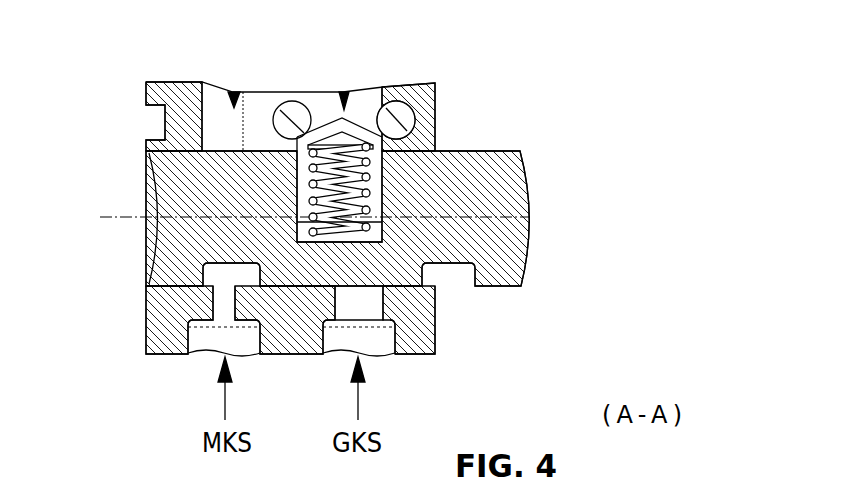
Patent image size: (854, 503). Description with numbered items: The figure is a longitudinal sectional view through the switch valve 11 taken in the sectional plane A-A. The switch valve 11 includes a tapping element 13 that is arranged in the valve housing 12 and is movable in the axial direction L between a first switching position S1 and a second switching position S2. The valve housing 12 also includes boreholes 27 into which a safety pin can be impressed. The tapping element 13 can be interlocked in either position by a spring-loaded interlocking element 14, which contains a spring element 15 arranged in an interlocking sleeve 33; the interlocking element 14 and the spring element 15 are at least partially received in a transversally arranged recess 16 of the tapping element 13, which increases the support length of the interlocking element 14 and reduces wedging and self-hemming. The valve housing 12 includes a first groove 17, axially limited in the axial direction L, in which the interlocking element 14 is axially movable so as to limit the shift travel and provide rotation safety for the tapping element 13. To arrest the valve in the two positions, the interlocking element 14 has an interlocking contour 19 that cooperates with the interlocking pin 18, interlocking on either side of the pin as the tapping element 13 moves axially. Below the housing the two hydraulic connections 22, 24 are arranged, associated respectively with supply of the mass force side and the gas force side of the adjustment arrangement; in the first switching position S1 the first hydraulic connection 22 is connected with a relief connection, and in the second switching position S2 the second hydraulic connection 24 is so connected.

The switch valve 11 is at (617, 133).
The valve housing 12 is at (437, 330).
The tapping element 13 is at (532, 237).
The interlocking element 14 is at (357, 118).
The spring element 15 is at (383, 178).
The recess 16 is at (384, 240).
The first groove 17 is at (252, 110).
The interlocking pin 18 is at (290, 119).
The interlocking contour 19 is at (322, 126).
The first hydraulic connection 22 is at (245, 342).
The second hydraulic connection 24 is at (380, 340).
The boreholes 27 is at (399, 116).
The interlocking sleeve 33 is at (383, 202).
The first switching position S1 is at (345, 92).
The second switching position S2 is at (233, 92).
The axial direction L is at (110, 217).